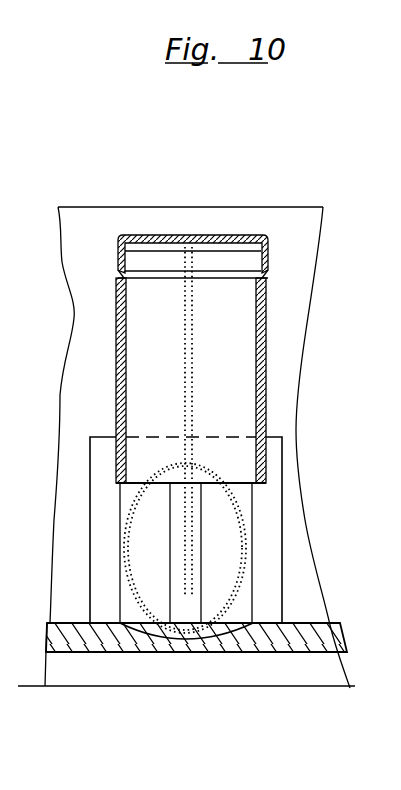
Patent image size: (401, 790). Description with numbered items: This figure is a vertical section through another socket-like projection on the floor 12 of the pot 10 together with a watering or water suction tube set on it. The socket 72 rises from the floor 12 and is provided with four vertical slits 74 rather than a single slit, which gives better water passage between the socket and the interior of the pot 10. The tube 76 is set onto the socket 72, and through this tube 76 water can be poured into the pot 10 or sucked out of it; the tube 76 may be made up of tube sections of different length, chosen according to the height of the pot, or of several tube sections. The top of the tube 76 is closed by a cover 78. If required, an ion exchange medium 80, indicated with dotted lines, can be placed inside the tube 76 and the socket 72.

The pot 10 is at (302, 201).
The floor 12 is at (121, 639).
The socket 72 is at (288, 548).
The vertical slits 74 is at (267, 513).
The tube 76 is at (110, 358).
The cover 78 is at (200, 236).
The ion exchange medium 80 is at (148, 576).